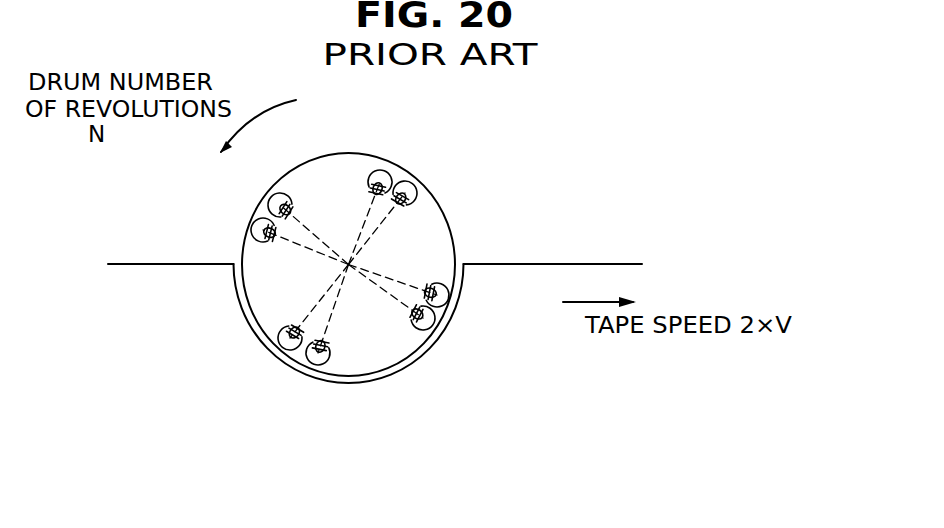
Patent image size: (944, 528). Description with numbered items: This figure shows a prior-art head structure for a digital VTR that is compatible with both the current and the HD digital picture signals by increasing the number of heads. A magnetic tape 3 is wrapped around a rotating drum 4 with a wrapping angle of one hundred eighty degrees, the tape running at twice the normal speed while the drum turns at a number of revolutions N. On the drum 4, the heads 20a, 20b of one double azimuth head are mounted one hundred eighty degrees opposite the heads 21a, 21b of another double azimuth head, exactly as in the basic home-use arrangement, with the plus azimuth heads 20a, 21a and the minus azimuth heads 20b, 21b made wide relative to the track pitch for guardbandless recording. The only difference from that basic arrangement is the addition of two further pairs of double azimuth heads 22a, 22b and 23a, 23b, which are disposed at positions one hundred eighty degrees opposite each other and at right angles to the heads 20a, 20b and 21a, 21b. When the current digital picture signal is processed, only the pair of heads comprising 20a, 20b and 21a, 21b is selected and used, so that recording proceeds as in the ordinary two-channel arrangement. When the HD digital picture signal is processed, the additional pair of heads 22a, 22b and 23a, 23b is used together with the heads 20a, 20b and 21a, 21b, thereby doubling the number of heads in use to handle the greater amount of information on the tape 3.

The magnetic tape 3 is at (603, 262).
The rotating drum 4 is at (263, 302).
The + azimuth head 20a is at (322, 364).
The − azimuth head 20b is at (287, 349).
The + azimuth head 21a is at (384, 171).
The − azimuth head 21b is at (417, 191).
The double azimuth head 22a is at (447, 301).
The double azimuth head 22b is at (424, 330).
The double azimuth head 23a is at (256, 237).
The double azimuth head 23b is at (268, 198).